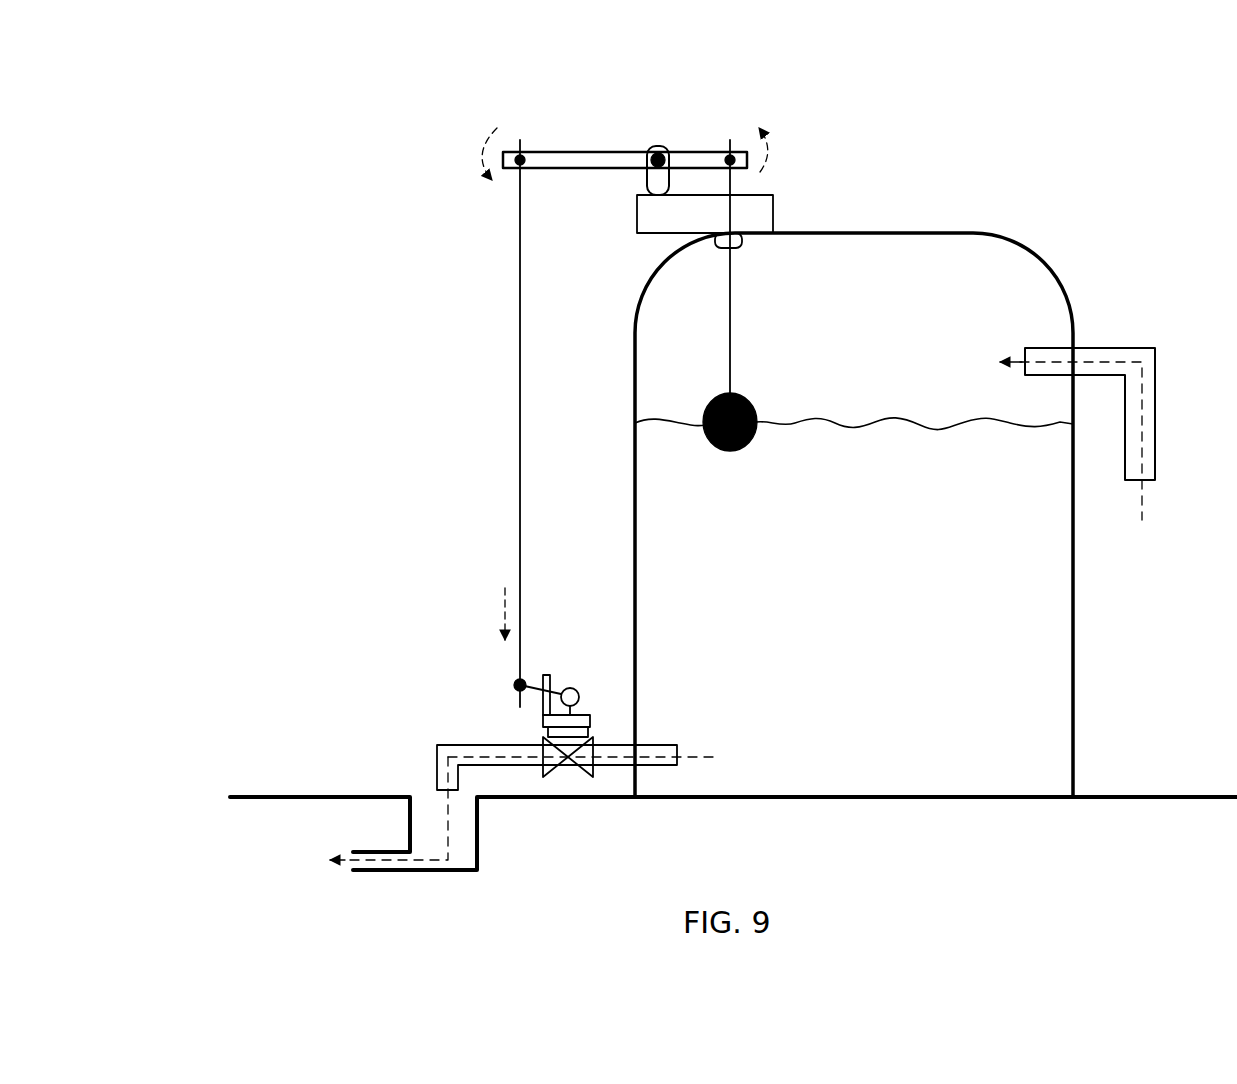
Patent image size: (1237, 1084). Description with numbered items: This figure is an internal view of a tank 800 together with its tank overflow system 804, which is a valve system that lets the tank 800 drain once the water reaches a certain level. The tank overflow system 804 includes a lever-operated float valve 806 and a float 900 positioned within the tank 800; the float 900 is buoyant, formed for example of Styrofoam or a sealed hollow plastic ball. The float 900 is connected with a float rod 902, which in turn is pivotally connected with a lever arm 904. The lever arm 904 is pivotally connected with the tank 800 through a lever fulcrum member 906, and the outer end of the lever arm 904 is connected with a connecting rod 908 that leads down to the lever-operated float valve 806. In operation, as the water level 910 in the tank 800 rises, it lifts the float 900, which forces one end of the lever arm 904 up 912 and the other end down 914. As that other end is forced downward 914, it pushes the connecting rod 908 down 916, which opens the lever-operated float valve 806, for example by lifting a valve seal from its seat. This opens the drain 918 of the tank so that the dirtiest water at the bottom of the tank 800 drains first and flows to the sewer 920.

The tank 800 is at (1037, 262).
The tank overflow system 804 is at (382, 172).
The lever-operated float valve 806 is at (592, 742).
The float 900 is at (751, 404).
The float rod 902 is at (732, 327).
The lever arm 904 is at (585, 157).
The lever fulcrum member 906 is at (660, 155).
The connecting rod 908 is at (518, 403).
The water level 910 is at (920, 428).
The upward movement of lever arm end 912 is at (767, 145).
The downward movement of lever arm end 914 is at (482, 158).
The downward movement of connecting rod 916 is at (504, 612).
The drain 918 is at (453, 755).
The sewer 920 is at (228, 840).